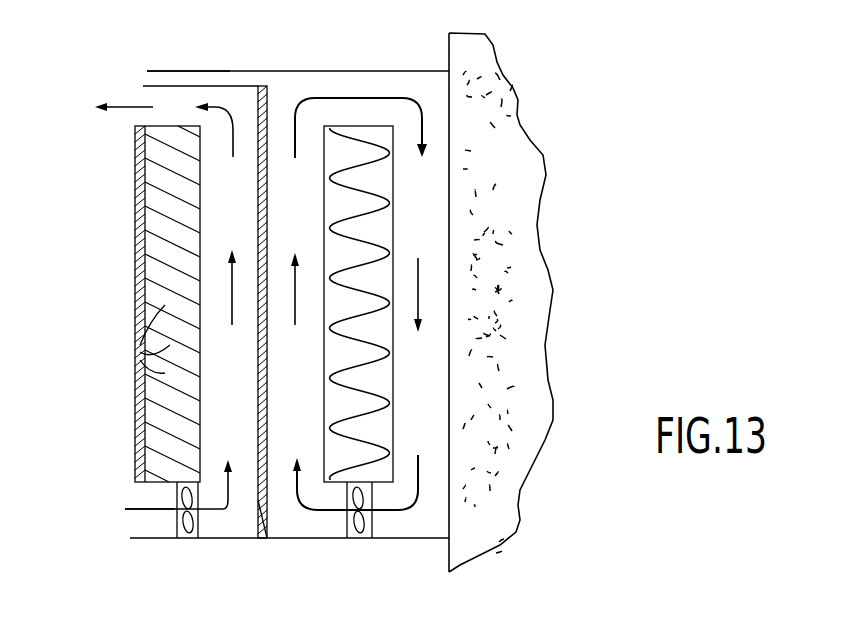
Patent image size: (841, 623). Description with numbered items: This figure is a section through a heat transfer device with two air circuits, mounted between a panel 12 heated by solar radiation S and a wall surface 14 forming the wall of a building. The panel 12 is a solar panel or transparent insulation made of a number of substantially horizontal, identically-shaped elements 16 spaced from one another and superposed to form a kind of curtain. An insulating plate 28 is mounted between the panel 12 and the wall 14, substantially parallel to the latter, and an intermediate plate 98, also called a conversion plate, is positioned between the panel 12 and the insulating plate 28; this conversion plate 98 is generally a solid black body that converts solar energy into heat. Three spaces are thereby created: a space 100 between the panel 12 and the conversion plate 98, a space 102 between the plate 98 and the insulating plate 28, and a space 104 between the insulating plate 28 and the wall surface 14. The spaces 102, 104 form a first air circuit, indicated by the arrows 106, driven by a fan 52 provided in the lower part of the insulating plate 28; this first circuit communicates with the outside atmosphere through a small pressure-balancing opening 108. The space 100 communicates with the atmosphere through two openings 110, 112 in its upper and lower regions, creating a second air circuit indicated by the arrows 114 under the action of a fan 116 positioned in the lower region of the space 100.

The panel 12 is at (160, 414).
The wall surface 14 is at (490, 503).
The identically-shaped elements 16 is at (150, 357).
The insulating plate 28 is at (353, 145).
The fan 52 is at (372, 518).
The intermediate plate 98 is at (265, 512).
The space 100 is at (246, 368).
The space 102 is at (306, 368).
The space 104 is at (432, 368).
The arrows 106 is at (387, 97).
The pressure-balancing opening 108 is at (243, 80).
The opening 110 is at (172, 107).
The opening 112 is at (140, 520).
The arrows 114 is at (223, 103).
The fan 116 is at (177, 525).
The solar radiation S is at (86, 232).